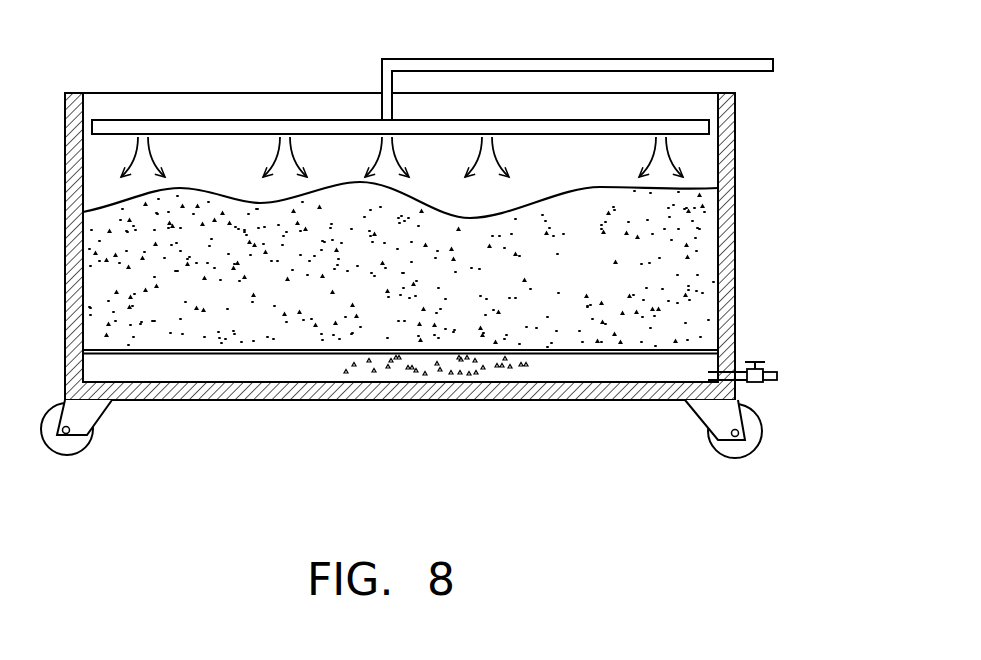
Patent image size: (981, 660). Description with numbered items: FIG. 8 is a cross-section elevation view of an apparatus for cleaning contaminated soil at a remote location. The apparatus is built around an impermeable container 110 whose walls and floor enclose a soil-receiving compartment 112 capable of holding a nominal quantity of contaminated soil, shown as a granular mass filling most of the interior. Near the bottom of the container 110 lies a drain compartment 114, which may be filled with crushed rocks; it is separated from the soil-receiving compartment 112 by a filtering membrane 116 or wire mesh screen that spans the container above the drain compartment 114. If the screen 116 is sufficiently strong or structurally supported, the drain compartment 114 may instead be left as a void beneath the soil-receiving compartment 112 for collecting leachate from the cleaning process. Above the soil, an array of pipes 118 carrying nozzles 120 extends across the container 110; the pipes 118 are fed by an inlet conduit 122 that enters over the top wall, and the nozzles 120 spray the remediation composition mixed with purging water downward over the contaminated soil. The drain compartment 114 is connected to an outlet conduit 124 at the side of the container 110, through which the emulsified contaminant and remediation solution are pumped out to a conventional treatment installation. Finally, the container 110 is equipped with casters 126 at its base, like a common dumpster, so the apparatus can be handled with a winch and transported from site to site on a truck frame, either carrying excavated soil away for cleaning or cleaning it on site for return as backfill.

The impermeable container 110 is at (735, 138).
The soil-receiving compartment 112 is at (400, 264).
The drain compartment 114 is at (383, 368).
The filtering membrane 116 is at (577, 354).
The pipes 118 is at (178, 120).
The nozzles 120 is at (282, 146).
The inlet conduit 122 is at (533, 59).
The outlet conduit 124 is at (772, 369).
The casters 126 is at (83, 452).